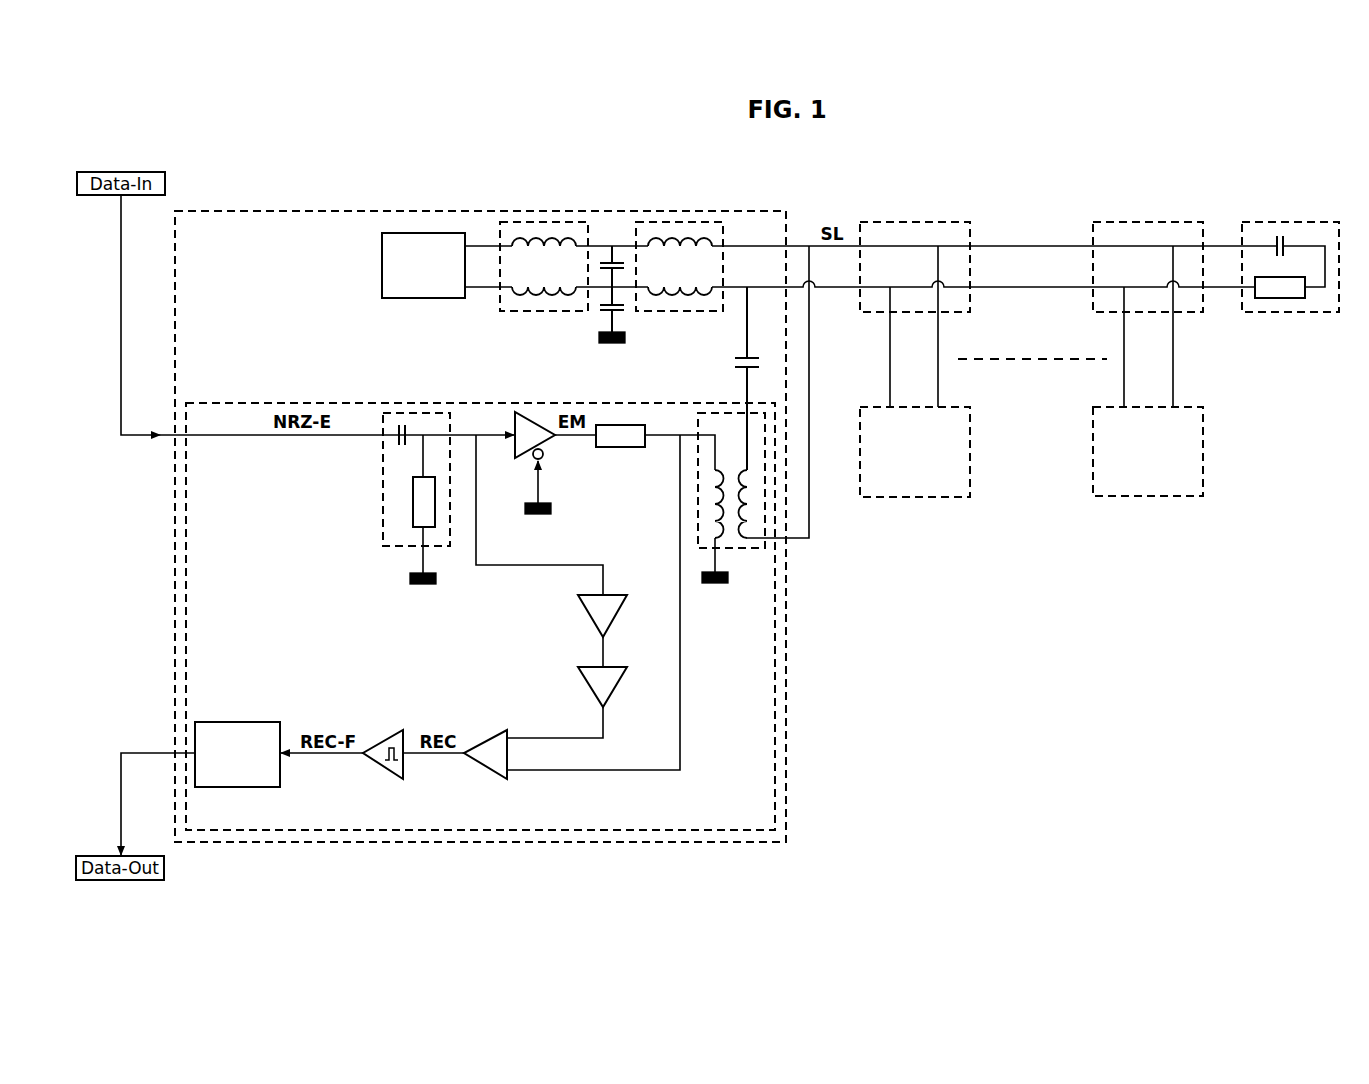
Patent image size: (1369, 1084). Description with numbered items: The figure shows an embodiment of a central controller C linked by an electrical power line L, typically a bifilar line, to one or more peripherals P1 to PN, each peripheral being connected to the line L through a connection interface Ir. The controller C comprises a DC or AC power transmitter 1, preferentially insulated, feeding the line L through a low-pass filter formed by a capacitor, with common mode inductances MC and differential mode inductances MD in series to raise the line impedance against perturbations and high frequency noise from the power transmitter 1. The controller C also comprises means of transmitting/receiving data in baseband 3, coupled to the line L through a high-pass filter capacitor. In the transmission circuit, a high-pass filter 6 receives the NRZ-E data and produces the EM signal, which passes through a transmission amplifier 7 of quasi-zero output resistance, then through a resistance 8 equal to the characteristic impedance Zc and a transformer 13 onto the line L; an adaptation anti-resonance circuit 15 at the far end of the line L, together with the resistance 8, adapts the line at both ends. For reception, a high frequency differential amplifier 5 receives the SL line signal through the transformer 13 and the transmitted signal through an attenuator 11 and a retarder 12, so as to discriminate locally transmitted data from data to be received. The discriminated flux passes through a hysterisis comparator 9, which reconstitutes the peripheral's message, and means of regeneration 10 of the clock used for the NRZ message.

The power transmitter 1 is at (420, 233).
The means of transmitting/receiving data in baseband 3 is at (775, 680).
The high frequency differential amplifier 5 is at (507, 730).
The high-pass filter 6 is at (383, 478).
The transmission amplifier 7 is at (514, 410).
The resistance 8 is at (621, 425).
The hysterisis comparator 9 is at (403, 730).
The means of regeneration of the clock 10 is at (237, 722).
The attenuator 11 is at (578, 597).
The retarder 12 is at (578, 668).
The transformer 13 is at (718, 413).
The adaptation anti-resonance circuit 15 is at (1290, 222).
The common mode filtering inductance MC is at (545, 222).
The differential mode inductance MD is at (681, 222).
The electrical power line L is at (835, 290).
The connection interface Ir is at (915, 222).
The peripheral P1 is at (913, 498).
The peripheral PN is at (1148, 497).
The central controller C is at (786, 622).